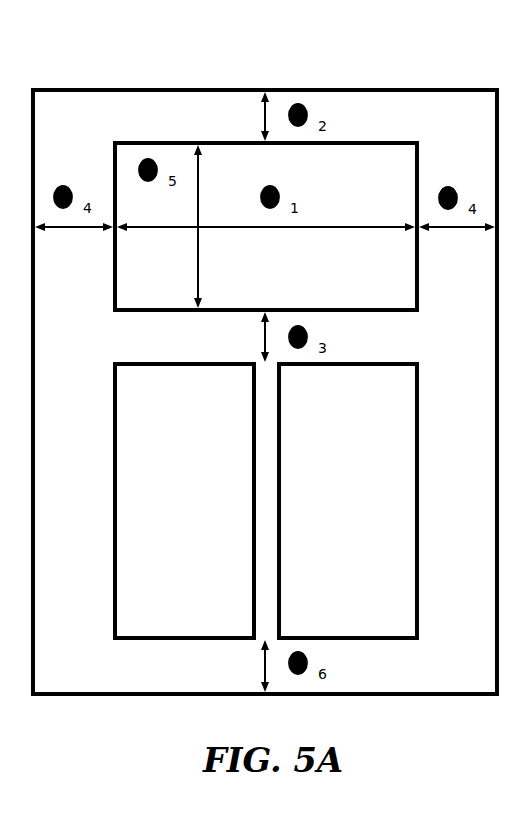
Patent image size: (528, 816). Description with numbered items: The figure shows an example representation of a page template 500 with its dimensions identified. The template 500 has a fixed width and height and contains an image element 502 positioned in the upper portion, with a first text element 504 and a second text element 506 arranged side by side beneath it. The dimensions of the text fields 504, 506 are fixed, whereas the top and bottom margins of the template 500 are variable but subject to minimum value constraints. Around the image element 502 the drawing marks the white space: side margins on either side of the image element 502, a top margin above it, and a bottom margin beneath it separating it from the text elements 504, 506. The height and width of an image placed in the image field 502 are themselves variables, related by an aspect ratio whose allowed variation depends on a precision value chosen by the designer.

The page template 500 is at (116, 62).
The image element 502 is at (266, 226).
The first text element 504 is at (184, 501).
The second text element 506 is at (348, 501).